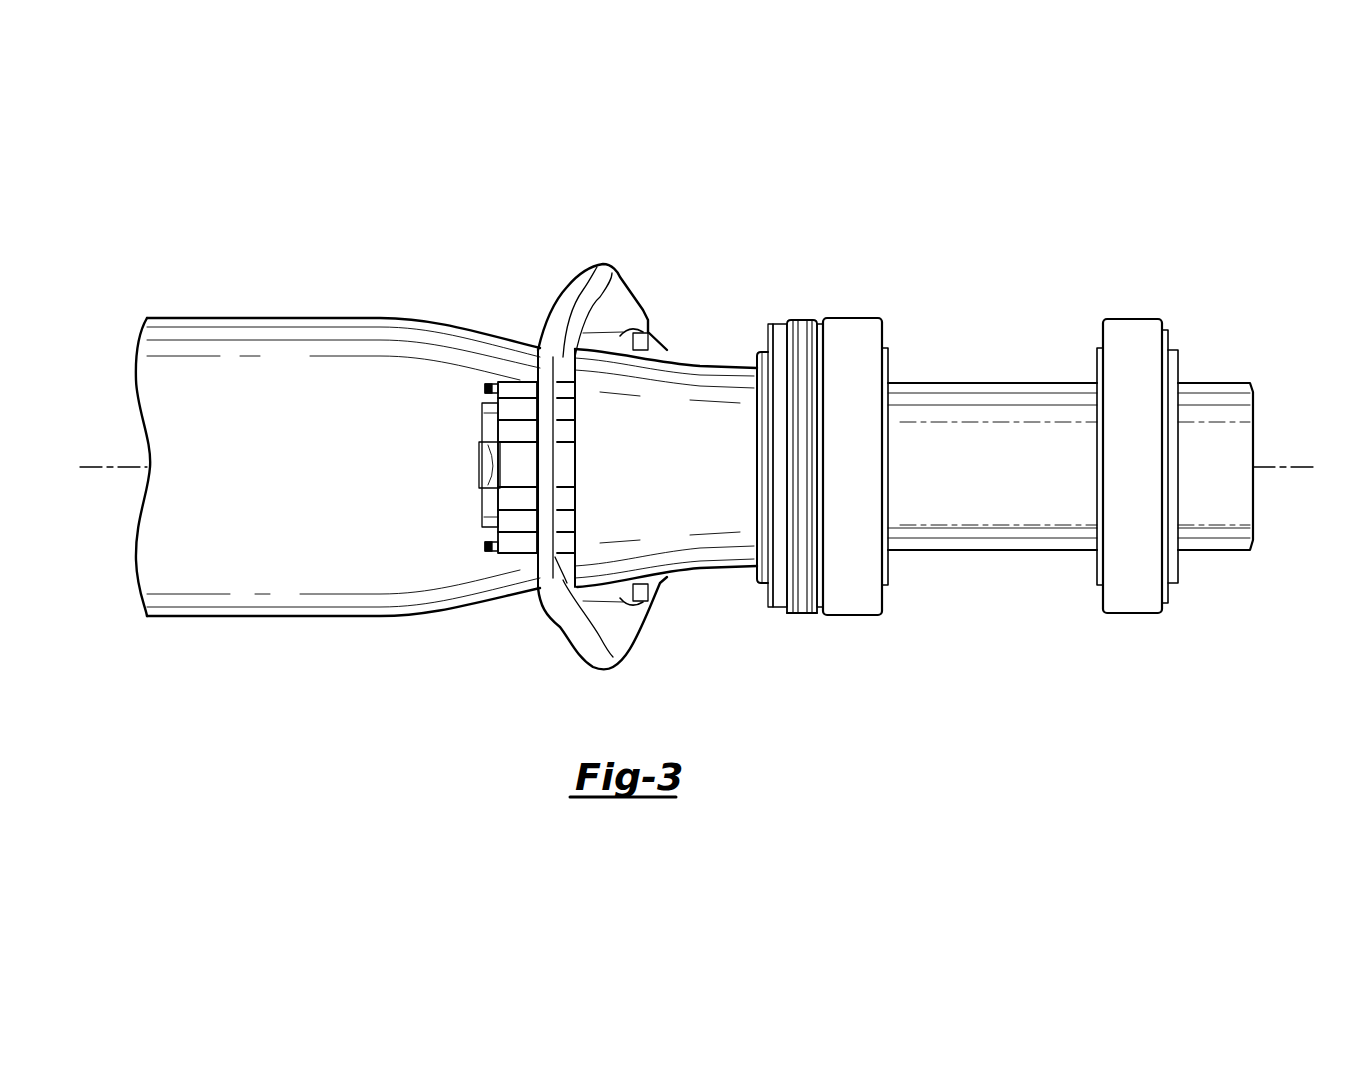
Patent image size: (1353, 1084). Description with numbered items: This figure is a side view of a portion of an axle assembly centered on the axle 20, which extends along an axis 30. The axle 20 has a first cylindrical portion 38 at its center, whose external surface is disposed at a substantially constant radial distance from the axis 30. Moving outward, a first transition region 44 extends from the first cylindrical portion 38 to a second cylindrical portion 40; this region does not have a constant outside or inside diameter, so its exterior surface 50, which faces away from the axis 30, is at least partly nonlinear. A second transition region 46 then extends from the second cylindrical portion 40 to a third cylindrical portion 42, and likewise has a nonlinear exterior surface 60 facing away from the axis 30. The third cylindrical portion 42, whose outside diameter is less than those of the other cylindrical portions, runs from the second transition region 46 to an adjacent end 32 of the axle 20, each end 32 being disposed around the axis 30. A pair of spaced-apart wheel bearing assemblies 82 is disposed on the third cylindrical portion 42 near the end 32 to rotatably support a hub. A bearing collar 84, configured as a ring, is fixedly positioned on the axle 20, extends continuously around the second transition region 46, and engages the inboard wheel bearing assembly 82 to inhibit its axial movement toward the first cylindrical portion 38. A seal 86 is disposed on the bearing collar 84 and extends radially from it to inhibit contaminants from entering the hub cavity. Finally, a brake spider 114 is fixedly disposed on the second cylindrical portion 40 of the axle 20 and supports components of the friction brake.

The axle 20 is at (446, 468).
The axis 30 is at (1270, 467).
The opposing ends 32 is at (1253, 397).
The first cylindrical portion 38 is at (338, 475).
The second cylindrical portion 40 is at (527, 590).
The third cylindrical portion 42 is at (1098, 476).
The first transition region 44 is at (427, 603).
The second transition region 46 is at (723, 568).
The exterior surface 50 is at (423, 330).
The exterior surface 60 is at (672, 362).
The wheel bearing assemblies 82 is at (839, 306).
The bearing collar 84 is at (757, 352).
The seal 86 is at (803, 322).
The brake spider 114 is at (578, 275).